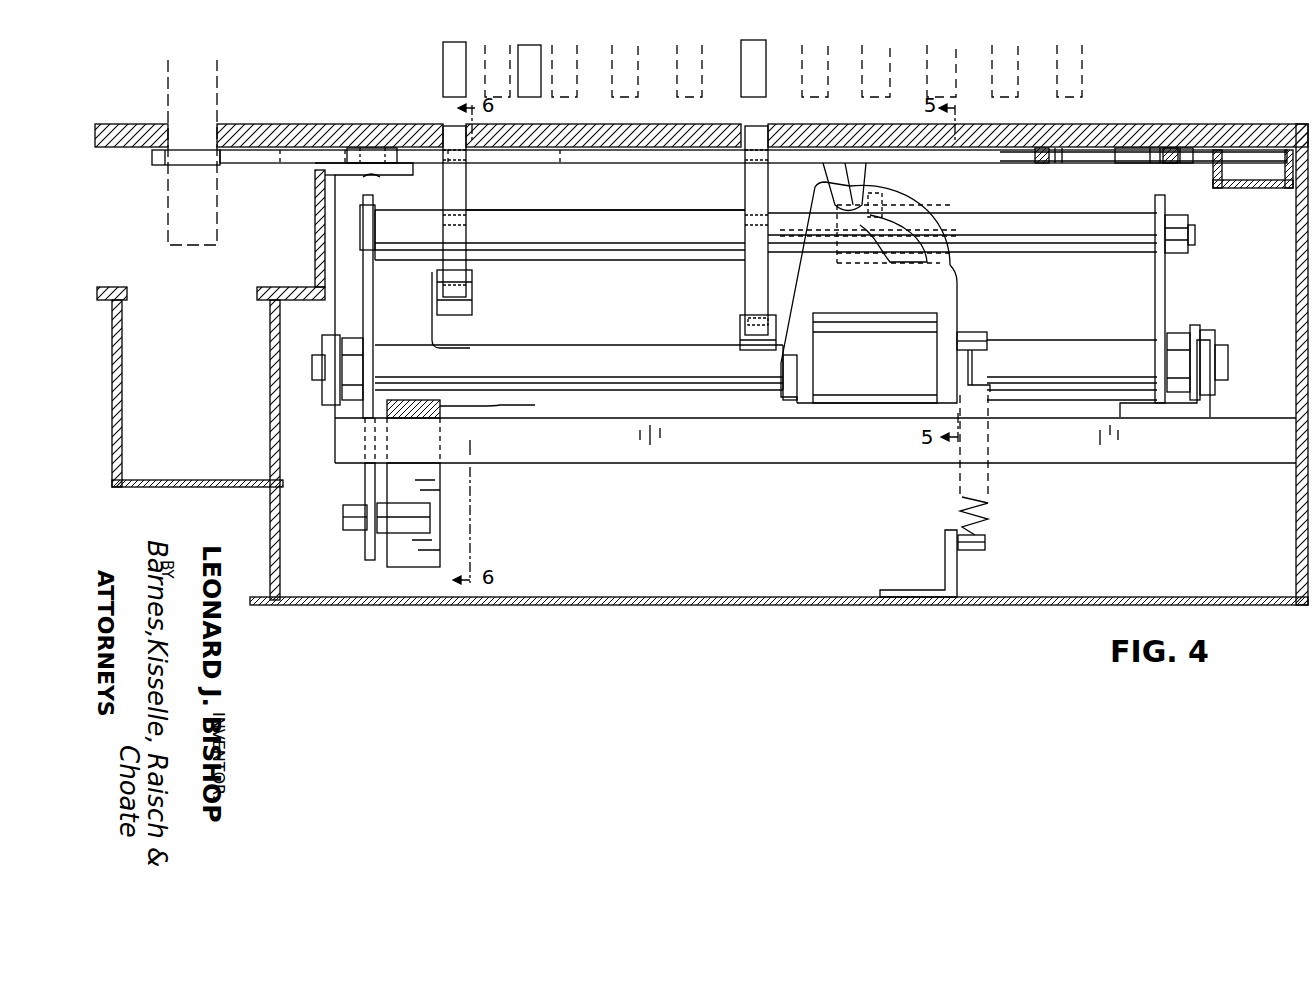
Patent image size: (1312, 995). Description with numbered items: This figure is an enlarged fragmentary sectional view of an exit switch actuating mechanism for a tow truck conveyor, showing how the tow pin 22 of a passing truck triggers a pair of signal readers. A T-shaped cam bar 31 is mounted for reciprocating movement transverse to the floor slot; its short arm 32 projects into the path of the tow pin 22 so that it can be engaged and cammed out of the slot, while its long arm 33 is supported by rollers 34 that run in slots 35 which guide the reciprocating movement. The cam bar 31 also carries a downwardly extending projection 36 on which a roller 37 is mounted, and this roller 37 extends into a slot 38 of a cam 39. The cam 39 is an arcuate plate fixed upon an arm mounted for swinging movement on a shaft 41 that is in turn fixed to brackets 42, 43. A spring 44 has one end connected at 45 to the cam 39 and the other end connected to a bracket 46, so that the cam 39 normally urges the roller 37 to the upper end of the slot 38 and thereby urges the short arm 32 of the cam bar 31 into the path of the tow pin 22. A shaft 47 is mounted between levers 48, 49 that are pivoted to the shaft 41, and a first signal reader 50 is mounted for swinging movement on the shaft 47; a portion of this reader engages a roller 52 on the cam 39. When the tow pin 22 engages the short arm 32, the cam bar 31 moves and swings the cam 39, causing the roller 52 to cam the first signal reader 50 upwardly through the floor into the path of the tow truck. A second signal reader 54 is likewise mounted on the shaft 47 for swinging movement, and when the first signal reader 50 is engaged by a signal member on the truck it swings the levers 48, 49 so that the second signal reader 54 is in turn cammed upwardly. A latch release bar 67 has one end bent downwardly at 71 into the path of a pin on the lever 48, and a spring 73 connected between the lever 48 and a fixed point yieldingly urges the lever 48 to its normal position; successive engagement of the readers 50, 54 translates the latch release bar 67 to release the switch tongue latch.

The tow pin 22 is at (213, 89).
The cam bar 31 is at (590, 162).
The short arm 32 is at (160, 166).
The long arm 33 is at (656, 164).
The rollers 34 is at (358, 148).
The slots 35 is at (1070, 163).
The downwardly extending projection 36 is at (867, 178).
The roller 37 is at (880, 212).
The slot 38 is at (912, 220).
The cam 39 is at (950, 282).
The shaft 41 is at (1228, 364).
The bracket 42 is at (335, 410).
The bracket 43 is at (1212, 403).
The spring 44 is at (990, 507).
The connection point 45 is at (983, 336).
The bracket 46 is at (960, 565).
The shaft 47 is at (1085, 250).
The lever 48 is at (370, 278).
The lever 49 is at (1163, 300).
The first signal reader 50 is at (745, 268).
The roller 52 is at (745, 327).
The second signal reader 54 is at (460, 180).
The latch release bar 67 is at (520, 406).
The bent end 71 is at (447, 485).
The spring 73 is at (342, 521).